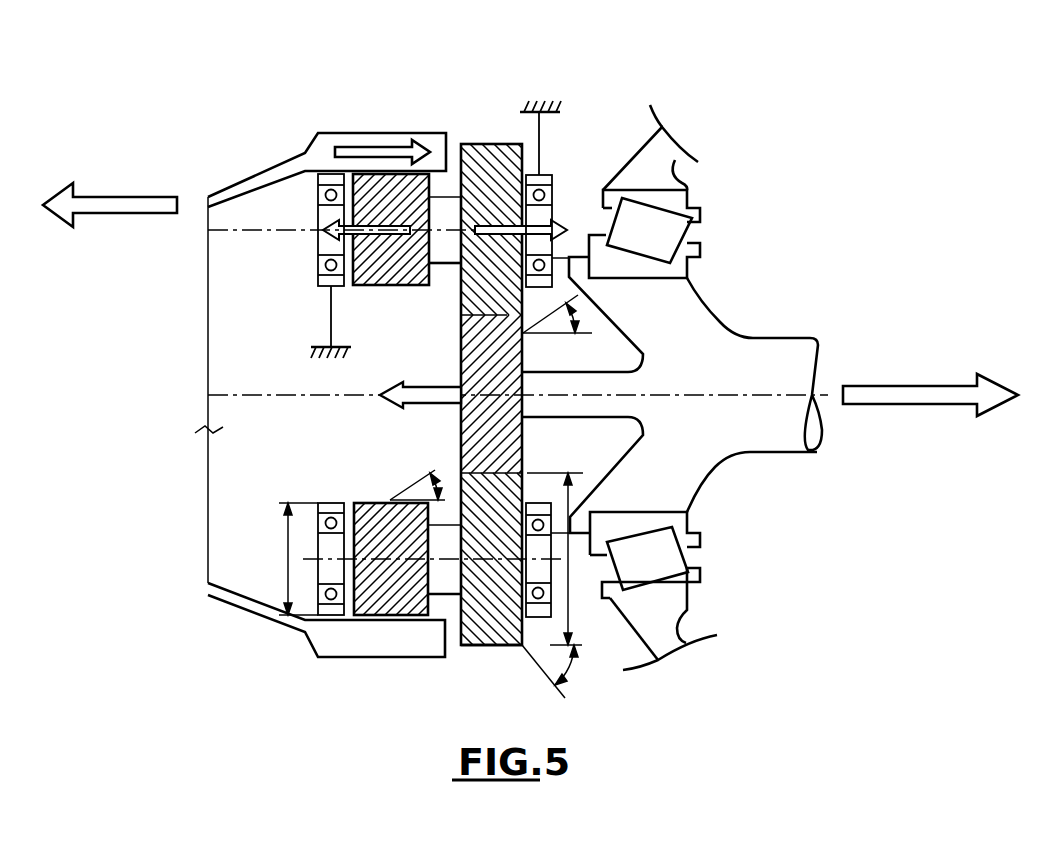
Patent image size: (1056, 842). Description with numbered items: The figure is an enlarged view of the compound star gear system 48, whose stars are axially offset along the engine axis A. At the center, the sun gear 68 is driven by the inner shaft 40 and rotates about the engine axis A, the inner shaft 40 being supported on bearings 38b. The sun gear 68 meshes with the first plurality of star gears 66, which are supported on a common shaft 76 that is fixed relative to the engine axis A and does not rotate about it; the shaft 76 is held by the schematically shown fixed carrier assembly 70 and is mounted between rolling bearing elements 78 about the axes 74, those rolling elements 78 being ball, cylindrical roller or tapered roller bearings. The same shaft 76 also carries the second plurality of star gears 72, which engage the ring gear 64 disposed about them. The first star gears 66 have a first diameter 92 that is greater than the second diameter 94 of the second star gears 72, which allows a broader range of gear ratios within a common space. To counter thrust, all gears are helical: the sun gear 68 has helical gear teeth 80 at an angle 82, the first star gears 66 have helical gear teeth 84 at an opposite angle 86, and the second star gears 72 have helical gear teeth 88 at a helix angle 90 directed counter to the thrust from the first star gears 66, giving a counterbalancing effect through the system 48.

The compound star gear system 48 is at (553, 52).
The first plurality of star gears 66 is at (525, 390).
The fixed carrier assembly 70 is at (347, 347).
The second plurality of star gears 72 is at (390, 185).
The axes 74 is at (275, 233).
The shaft 76 is at (443, 247).
The rolling bearing elements 78 is at (322, 297).
The helical gear teeth 80 is at (508, 352).
The angle 82 is at (578, 322).
The bearings 38b is at (692, 225).
The inner shaft 40 is at (803, 350).
The sun gear 68 is at (460, 413).
The helical gear teeth 88 is at (369, 504).
The helix angle 90 is at (438, 494).
The second diameter 94 is at (285, 545).
The ring gear 64 is at (387, 647).
The helical gear teeth 84 is at (492, 657).
The first diameter 92 is at (575, 605).
The angle 86 is at (573, 670).
The engine axis A is at (228, 395).